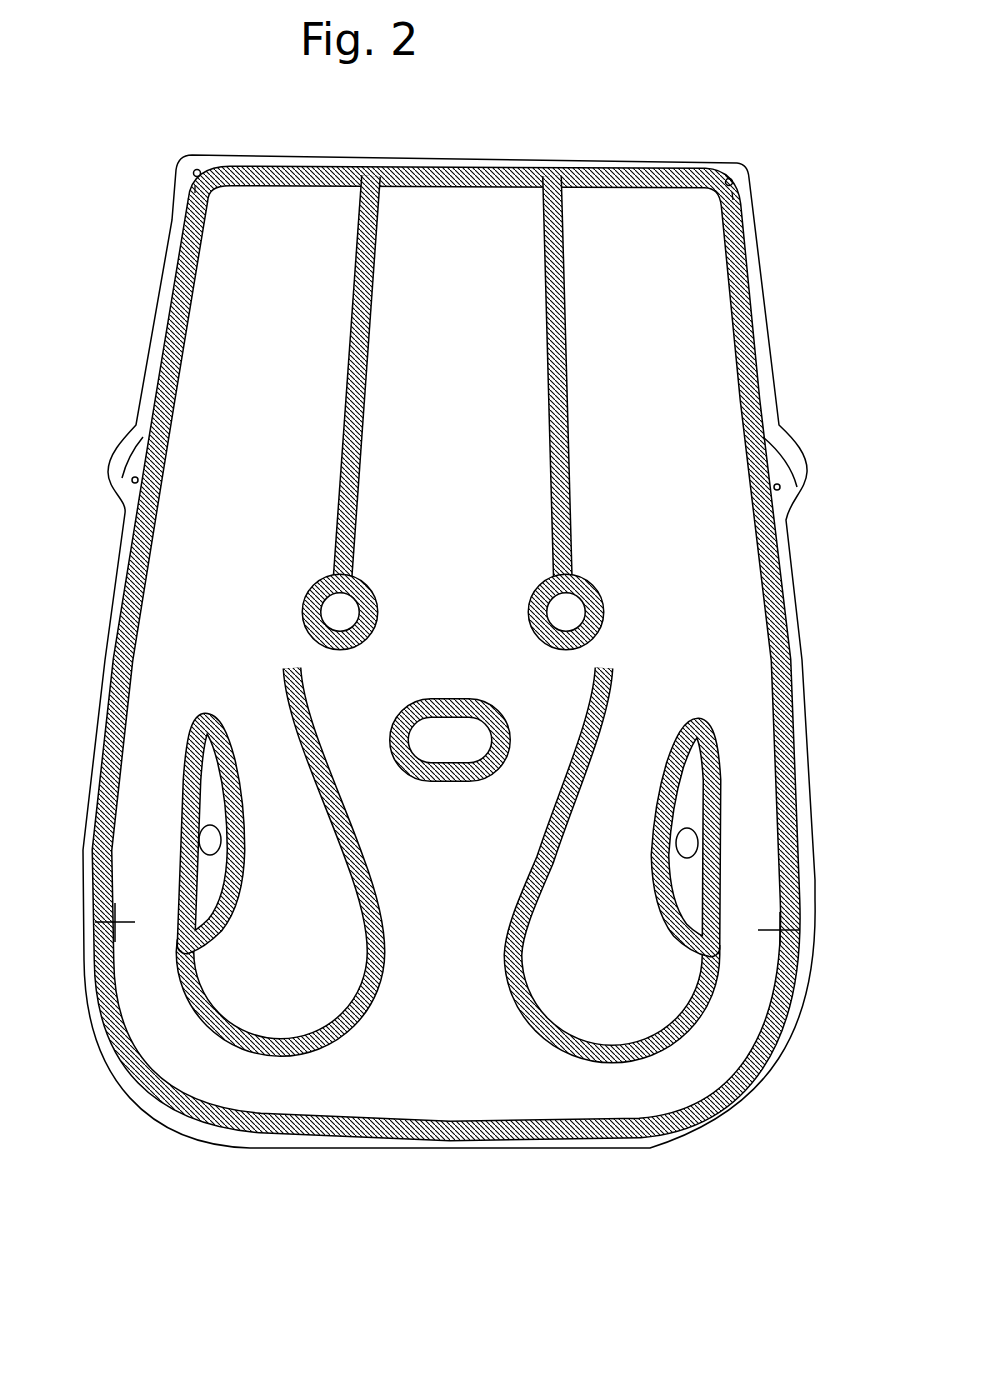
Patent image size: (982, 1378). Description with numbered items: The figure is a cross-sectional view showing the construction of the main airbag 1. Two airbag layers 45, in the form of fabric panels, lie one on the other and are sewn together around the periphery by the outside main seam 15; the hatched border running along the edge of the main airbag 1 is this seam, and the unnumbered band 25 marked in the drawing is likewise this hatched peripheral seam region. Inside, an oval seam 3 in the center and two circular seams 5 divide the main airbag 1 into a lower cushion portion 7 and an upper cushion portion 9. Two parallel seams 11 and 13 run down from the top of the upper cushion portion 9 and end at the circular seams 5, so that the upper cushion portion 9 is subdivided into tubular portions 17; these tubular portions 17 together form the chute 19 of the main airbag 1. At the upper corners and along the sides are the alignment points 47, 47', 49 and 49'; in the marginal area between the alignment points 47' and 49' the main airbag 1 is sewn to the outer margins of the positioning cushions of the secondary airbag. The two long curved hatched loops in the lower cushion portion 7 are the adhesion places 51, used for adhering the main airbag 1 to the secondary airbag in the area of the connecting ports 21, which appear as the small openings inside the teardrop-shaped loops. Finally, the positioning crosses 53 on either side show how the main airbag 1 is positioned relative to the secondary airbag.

The main airbag 1 is at (492, 1095).
The oval seam 3 is at (390, 723).
The circular seams 5 is at (367, 593).
The lower cushion portion 7 is at (454, 988).
The upper cushion portion 9 is at (703, 400).
The parallel seam 11 is at (357, 330).
The parallel seam 13 is at (567, 505).
The outside main seam 15 is at (130, 563).
The tubular portions 17 is at (281, 437).
The chute 19 is at (478, 203).
The connecting ports 21 is at (232, 837).
The peripheral seal band 25 is at (168, 330).
The airbag layers 45 is at (150, 637).
The alignment point 47 is at (147, 157).
The alignment point 47' is at (761, 154).
The alignment point 49 is at (92, 453).
The alignment point 49' is at (818, 463).
The adhesion places 51 is at (363, 861).
The positioning crosses 53 is at (95, 950).